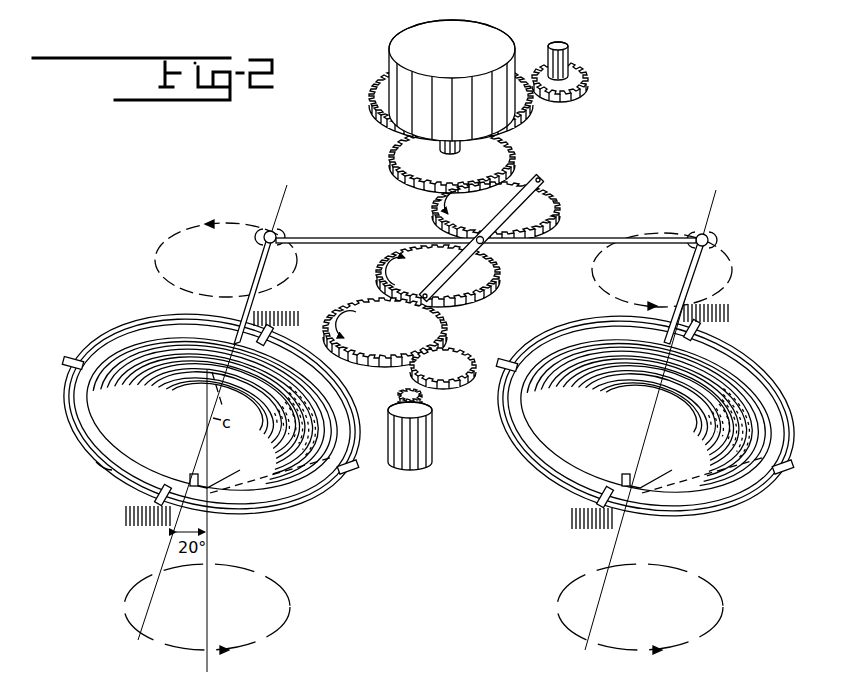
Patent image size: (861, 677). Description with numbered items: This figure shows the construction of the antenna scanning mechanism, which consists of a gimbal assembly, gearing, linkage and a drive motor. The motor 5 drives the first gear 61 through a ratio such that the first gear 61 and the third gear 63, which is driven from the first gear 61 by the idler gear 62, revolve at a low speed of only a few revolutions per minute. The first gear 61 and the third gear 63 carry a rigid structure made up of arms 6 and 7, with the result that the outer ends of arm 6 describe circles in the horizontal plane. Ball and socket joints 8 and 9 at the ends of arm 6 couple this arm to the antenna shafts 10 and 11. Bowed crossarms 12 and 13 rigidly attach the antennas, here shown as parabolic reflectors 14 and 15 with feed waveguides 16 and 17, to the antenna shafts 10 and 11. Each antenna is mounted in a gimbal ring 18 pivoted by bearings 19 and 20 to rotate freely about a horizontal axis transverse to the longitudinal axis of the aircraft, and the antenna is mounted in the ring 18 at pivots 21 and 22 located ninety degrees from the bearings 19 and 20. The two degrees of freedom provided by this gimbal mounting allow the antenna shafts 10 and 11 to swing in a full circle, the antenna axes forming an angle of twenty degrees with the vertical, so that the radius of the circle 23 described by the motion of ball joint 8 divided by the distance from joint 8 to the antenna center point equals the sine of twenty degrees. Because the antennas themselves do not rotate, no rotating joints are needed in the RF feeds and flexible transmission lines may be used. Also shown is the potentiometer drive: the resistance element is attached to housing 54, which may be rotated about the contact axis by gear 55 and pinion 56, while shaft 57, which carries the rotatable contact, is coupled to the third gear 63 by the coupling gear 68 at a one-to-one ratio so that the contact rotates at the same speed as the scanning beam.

The motor 5 is at (432, 436).
The arm 6 is at (386, 237).
The arm 7 is at (512, 210).
The ball and socket joint 8 is at (277, 226).
The ball and socket joint 9 is at (700, 228).
The antenna shaft 10 is at (254, 268).
The antenna shaft 11 is at (697, 270).
The bowed crossarm 12 is at (144, 337).
The bowed crossarm 13 is at (750, 397).
The parabolic reflector 14 is at (127, 410).
The parabolic reflector 15 is at (563, 427).
The feed waveguide 16 is at (238, 488).
The feed waveguide 17 is at (655, 490).
The gimbal ring 18 is at (112, 467).
The bearing 19 is at (148, 494).
The bearing 20 is at (275, 335).
The pivot 21 is at (73, 356).
The pivot 22 is at (356, 474).
The circle 23 is at (172, 243).
The housing 54 is at (404, 42).
The gear 55 is at (533, 106).
The pinion 56 is at (587, 73).
The shaft 57 is at (440, 145).
The gear G1 61 is at (348, 300).
The idler gear G2 62 is at (378, 264).
The gear G3 63 is at (434, 203).
The gear G8 68 is at (498, 147).